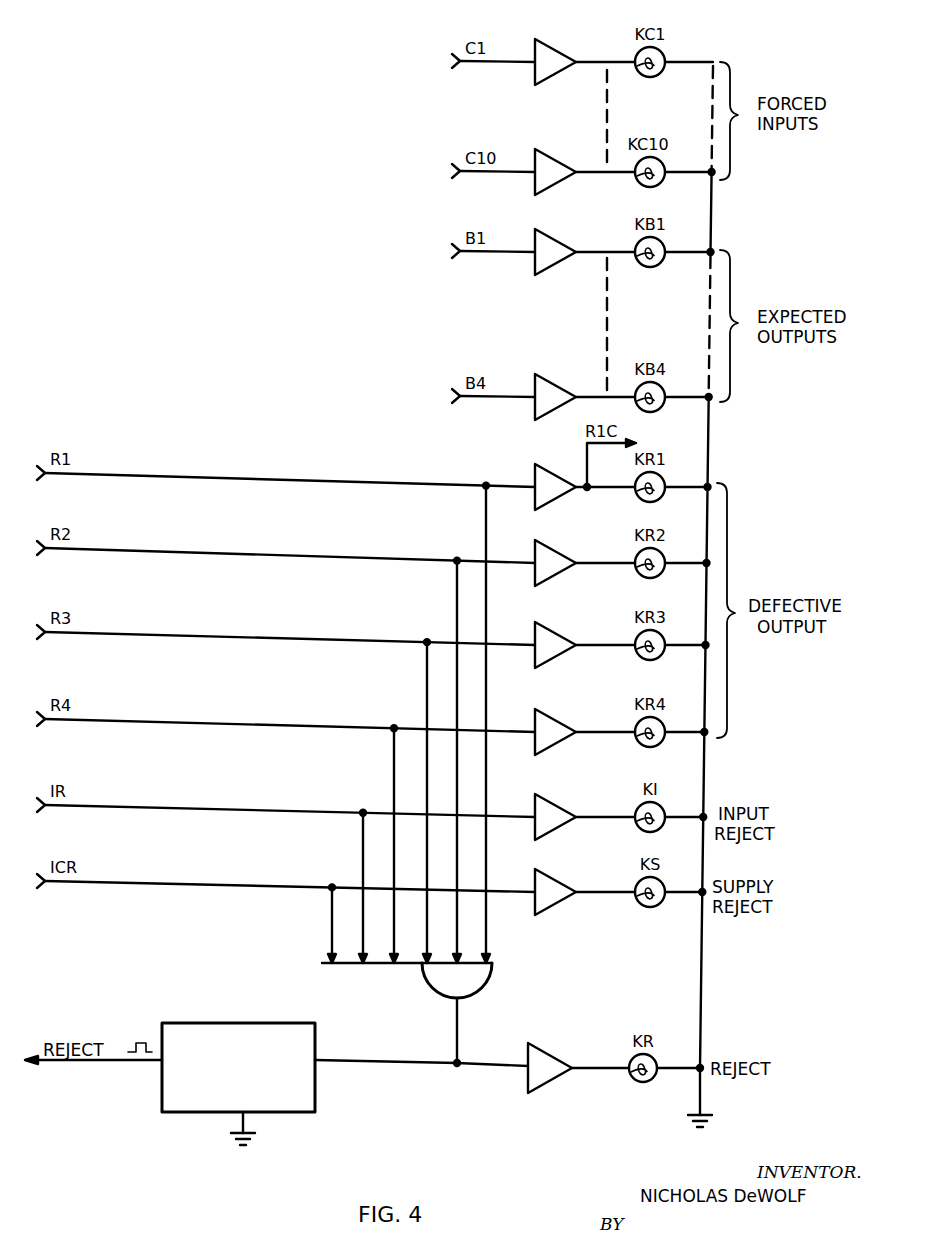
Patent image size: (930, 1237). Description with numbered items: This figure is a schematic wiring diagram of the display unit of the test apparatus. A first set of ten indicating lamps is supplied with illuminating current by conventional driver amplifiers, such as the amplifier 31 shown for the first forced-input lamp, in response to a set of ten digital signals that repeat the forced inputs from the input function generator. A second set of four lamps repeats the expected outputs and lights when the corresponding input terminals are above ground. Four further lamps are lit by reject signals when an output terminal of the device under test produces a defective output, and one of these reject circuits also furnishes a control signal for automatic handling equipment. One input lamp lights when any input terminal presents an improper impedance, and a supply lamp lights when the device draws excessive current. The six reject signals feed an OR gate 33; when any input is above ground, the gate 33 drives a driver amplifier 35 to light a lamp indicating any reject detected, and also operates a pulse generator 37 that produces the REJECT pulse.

The driver amplifier 31 is at (566, 46).
The OR gate 33 is at (486, 995).
The driver amplifier 35 is at (551, 1053).
The pulse generator 37 is at (224, 1023).